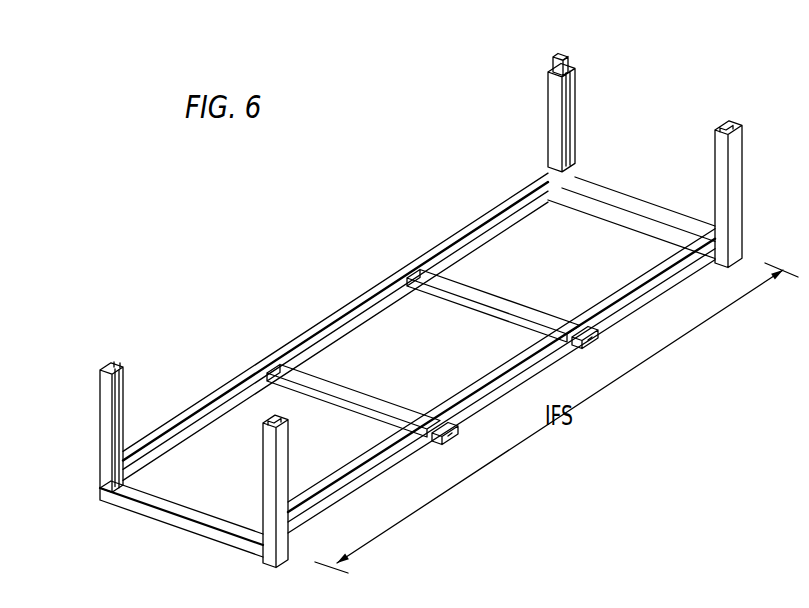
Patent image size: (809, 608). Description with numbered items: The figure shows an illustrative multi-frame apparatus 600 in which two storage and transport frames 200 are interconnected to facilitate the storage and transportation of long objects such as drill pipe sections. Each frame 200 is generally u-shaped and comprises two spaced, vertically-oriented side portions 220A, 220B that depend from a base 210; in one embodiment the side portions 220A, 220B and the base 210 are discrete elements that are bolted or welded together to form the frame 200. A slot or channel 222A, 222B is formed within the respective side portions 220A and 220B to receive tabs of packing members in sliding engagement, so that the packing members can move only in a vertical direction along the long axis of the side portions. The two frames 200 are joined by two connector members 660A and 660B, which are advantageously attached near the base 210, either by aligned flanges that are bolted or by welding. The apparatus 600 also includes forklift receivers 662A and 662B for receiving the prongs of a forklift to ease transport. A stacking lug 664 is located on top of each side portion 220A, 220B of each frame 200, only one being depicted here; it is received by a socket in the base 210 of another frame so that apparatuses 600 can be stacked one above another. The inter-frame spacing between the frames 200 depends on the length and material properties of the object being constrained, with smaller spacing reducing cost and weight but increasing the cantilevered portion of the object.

The storage and transport frame 200 is at (480, 105).
The base 210 is at (152, 508).
The side portion 220A is at (117, 426).
The side portion 220B is at (283, 491).
The channel 222A is at (116, 384).
The channel 222B is at (263, 440).
The multi-frame apparatus 600 is at (382, 291).
The connector member 660A is at (339, 299).
The connector member 660B is at (478, 393).
The forklift receiver 662A is at (330, 386).
The forklift receiver 662B is at (485, 302).
The stacking lug 664 is at (560, 58).